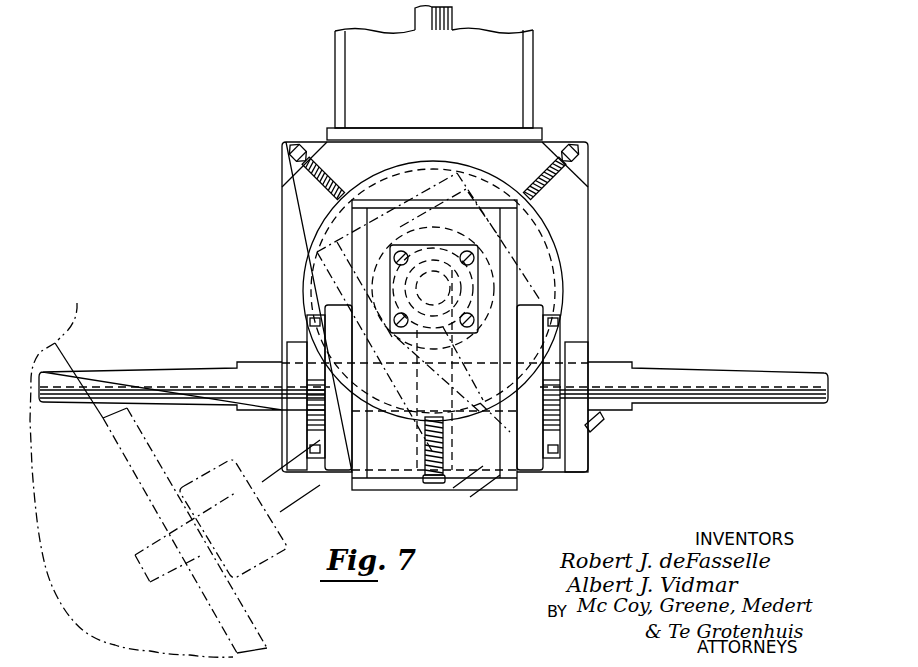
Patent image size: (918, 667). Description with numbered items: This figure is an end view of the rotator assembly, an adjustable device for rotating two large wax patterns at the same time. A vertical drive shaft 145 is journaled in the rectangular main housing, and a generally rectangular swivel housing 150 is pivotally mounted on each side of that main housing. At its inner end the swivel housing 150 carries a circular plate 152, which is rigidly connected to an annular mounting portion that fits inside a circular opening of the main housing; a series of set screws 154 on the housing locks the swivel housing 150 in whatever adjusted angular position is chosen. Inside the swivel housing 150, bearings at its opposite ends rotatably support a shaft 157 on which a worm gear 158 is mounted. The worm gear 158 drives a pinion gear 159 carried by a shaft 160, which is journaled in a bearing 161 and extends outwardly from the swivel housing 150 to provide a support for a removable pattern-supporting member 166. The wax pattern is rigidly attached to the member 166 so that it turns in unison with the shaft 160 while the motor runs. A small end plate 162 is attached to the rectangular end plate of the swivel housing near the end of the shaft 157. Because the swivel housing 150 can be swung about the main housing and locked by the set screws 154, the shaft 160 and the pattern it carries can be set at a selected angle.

The vertical drive shaft 145 is at (415, 18).
The swivel housing 150 is at (305, 245).
The circular plate 152 is at (303, 263).
The set screws 154 is at (282, 176).
The shaft 157 is at (497, 178).
The worm gear 158 is at (473, 278).
The pinion gear 159 is at (595, 435).
The shaft 160 is at (150, 368).
The bearing 161 is at (308, 337).
The small end plate 162 is at (423, 247).
The pattern-supporting member 166 is at (243, 602).